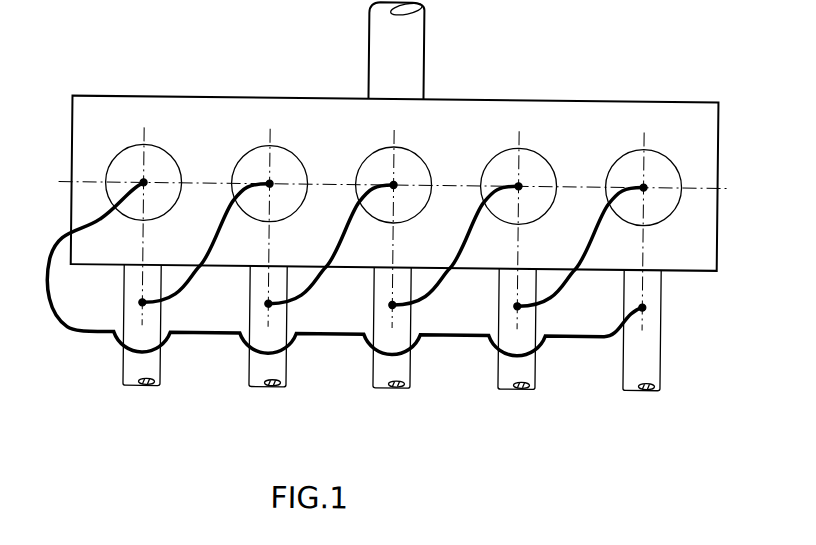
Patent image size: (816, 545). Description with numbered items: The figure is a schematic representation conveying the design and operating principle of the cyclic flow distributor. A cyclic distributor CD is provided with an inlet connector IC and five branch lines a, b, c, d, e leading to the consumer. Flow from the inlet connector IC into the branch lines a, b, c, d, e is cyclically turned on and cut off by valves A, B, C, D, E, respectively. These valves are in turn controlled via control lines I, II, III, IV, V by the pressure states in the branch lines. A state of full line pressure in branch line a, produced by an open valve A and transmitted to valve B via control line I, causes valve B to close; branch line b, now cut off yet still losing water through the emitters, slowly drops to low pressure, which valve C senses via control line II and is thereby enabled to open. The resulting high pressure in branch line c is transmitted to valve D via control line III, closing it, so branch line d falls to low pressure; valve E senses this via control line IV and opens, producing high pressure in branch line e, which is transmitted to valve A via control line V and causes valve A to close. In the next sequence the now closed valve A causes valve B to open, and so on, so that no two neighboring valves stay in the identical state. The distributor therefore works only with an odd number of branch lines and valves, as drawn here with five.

The cyclic distributor CD is at (708, 126).
The inlet connector IC is at (422, 52).
The valve A is at (143, 217).
The valve B is at (269, 218).
The valve C is at (393, 220).
The valve D is at (518, 221).
The valve E is at (643, 222).
The branch line a is at (142, 342).
The branch line b is at (268, 343).
The branch line c is at (392, 344).
The branch line d is at (517, 346).
The branch line e is at (642, 347).
The control line I is at (184, 282).
The control line II is at (310, 282).
The control line III is at (434, 282).
The control line IV is at (559, 282).
The control line V is at (580, 337).